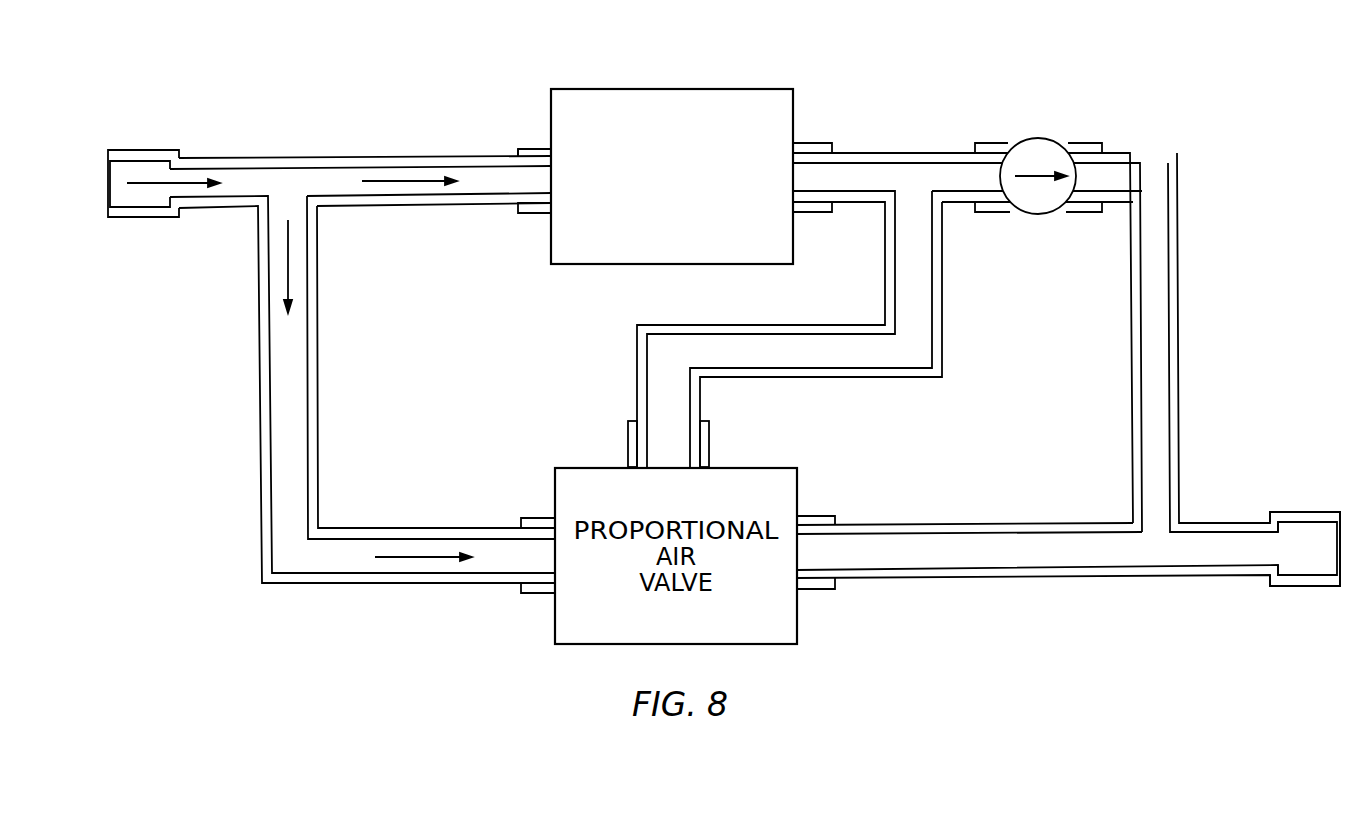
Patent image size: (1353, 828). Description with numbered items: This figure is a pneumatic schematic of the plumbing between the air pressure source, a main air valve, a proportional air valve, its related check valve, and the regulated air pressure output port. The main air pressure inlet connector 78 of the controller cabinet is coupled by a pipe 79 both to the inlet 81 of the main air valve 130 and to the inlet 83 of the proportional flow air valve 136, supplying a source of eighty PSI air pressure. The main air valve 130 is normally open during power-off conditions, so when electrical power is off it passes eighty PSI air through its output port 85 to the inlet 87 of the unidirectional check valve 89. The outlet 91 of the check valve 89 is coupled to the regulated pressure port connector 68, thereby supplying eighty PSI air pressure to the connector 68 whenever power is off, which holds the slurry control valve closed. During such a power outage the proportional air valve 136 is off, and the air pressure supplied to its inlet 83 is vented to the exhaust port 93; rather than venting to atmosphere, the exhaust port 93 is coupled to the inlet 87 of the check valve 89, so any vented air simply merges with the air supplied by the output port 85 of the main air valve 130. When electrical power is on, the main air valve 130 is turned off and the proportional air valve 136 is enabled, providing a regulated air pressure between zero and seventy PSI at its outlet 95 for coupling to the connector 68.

The main air pressure inlet connector 78 is at (142, 150).
The pipe 79 is at (288, 158).
The inlet of main air valve 81 is at (535, 147).
The main air valve 130 is at (670, 88).
The output port of main air valve 85 is at (815, 143).
The inlet of check valve 87 is at (997, 143).
The unidirectional check valve 89 is at (1037, 215).
The outlet of check valve 91 is at (1082, 143).
The proportional flow air valve 136 is at (591, 467).
The exhaust port 93 is at (710, 443).
The inlet of proportional flow air valve 83 is at (537, 518).
The outlet of proportional air valve 95 is at (817, 516).
The regulated pressure port connector 68 is at (1303, 510).